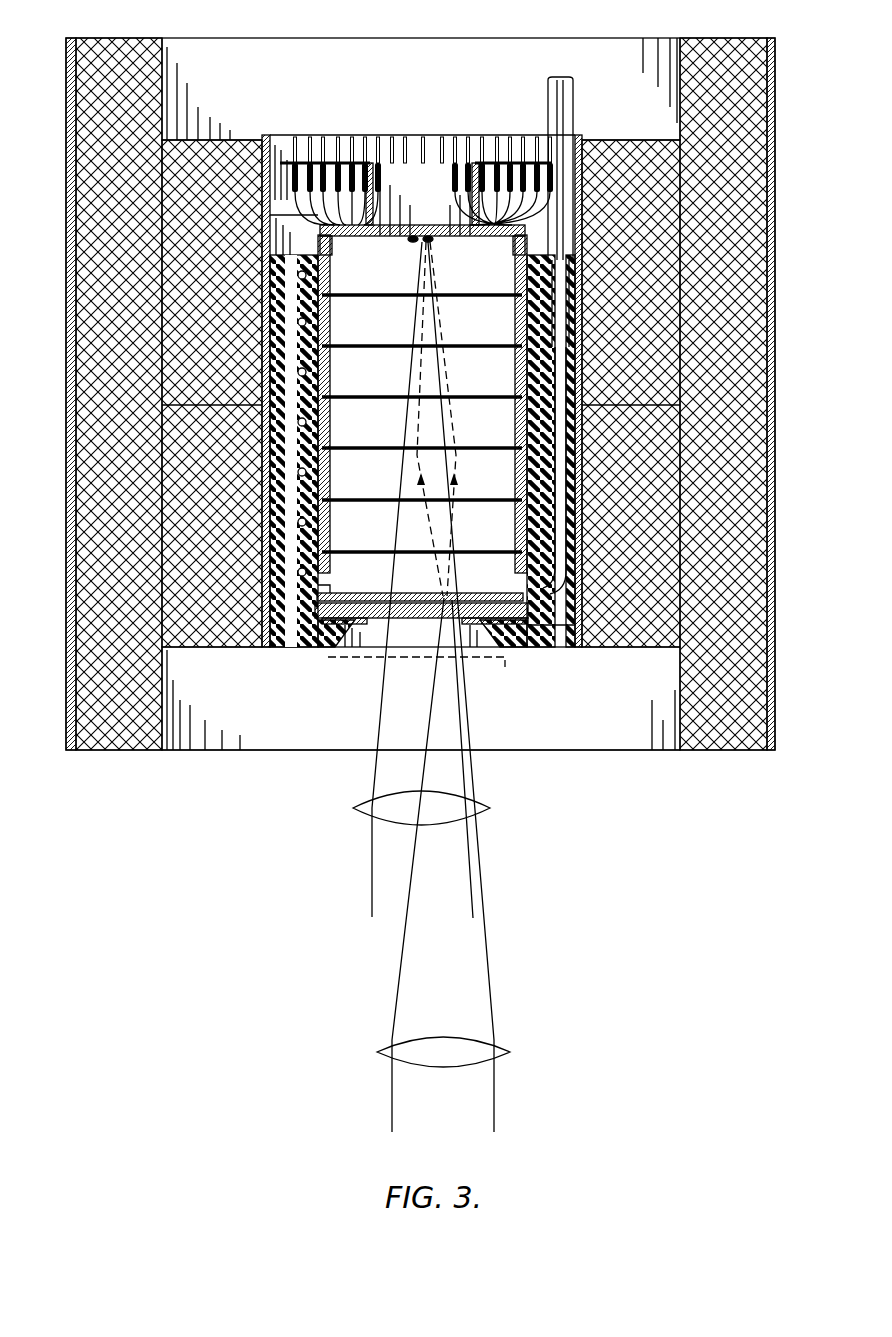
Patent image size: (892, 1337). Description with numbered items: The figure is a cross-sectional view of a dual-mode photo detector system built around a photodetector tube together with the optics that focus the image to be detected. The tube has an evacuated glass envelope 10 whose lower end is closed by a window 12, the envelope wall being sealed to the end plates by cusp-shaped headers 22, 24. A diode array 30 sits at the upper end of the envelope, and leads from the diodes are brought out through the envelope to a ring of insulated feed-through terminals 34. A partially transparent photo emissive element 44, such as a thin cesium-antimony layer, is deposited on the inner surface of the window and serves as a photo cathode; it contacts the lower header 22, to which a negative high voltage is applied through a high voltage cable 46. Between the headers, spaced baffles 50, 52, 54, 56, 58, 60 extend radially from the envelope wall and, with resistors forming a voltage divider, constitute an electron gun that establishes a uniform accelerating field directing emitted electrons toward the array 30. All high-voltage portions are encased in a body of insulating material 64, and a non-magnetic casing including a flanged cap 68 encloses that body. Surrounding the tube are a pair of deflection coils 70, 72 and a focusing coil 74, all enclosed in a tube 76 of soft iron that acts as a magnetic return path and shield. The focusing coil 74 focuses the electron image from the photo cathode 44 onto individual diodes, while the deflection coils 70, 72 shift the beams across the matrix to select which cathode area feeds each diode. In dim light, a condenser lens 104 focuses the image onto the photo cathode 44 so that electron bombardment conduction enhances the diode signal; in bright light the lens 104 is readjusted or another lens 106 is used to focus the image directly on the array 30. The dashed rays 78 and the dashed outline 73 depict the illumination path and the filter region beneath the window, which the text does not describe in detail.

The envelope 10 is at (516, 281).
The window 12 is at (383, 594).
The lower header 22 is at (320, 586).
The upper header 24 is at (325, 270).
The diode array 30 is at (424, 241).
The terminals 34 is at (380, 138).
The photo emissive element 44 is at (470, 596).
The high voltage cable 46 is at (563, 103).
The baffle 50 is at (353, 553).
The baffle 52 is at (353, 501).
The baffle 54 is at (353, 449).
The baffle 56 is at (354, 398).
The baffle 58 is at (355, 347).
The baffle 60 is at (357, 296).
The body of insulating material 64 is at (550, 648).
The flanged cap 68 is at (264, 135).
The deflection coil 70 is at (212, 153).
The deflection coil 72 is at (232, 637).
The filter outline 73 is at (505, 667).
The focusing coil 74 is at (720, 55).
The tube of magnetic material 76 is at (775, 308).
The light rays 78 is at (457, 432).
The condenser lens 104 is at (506, 1052).
The lens 106 is at (490, 808).